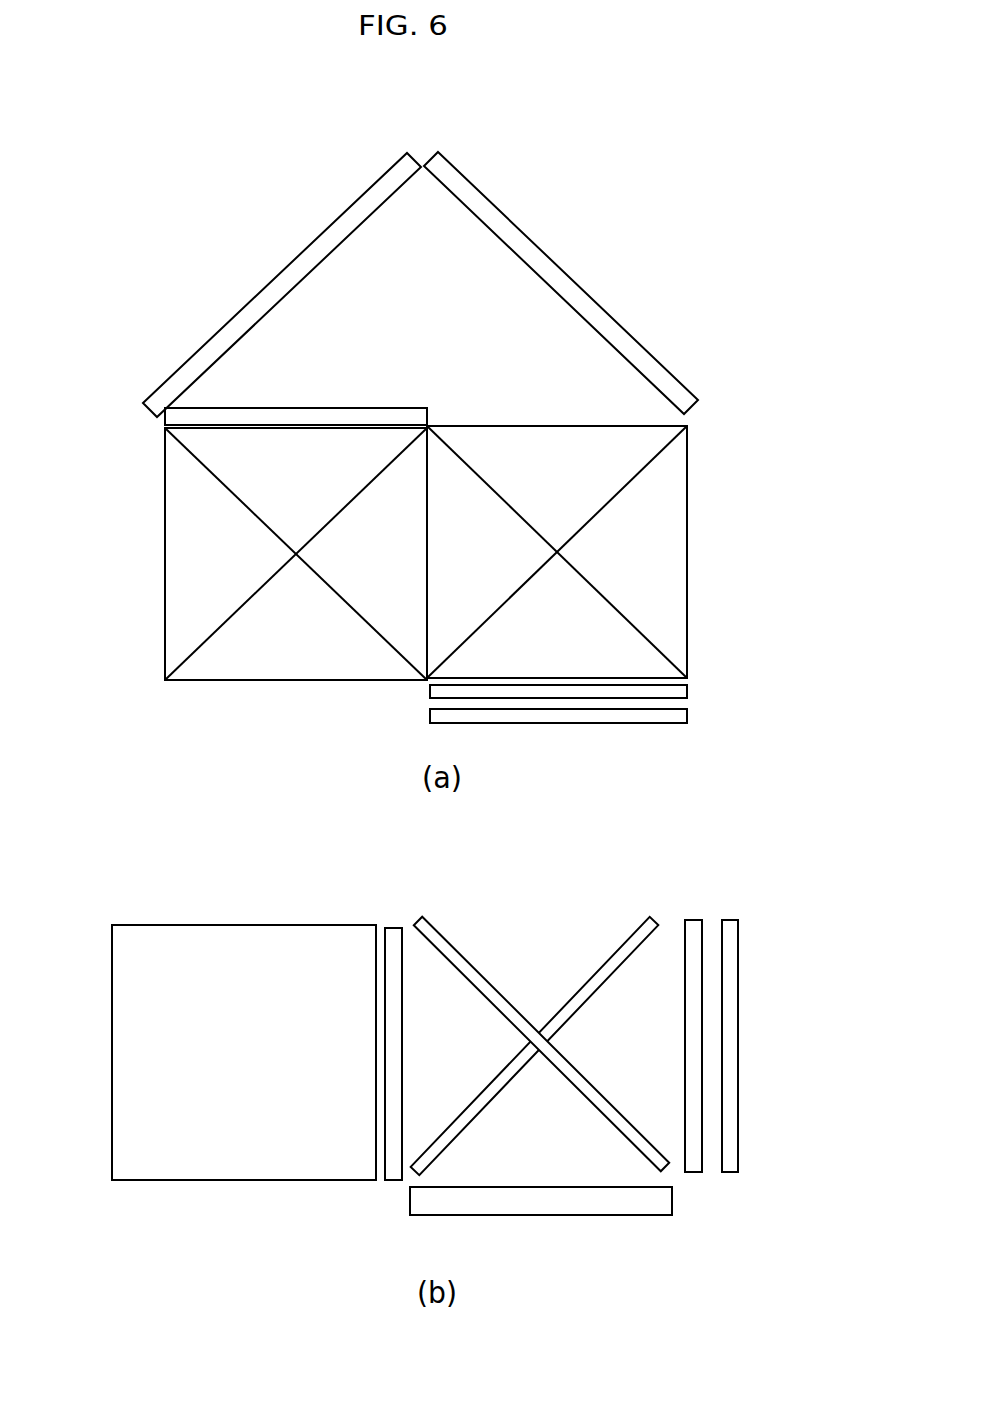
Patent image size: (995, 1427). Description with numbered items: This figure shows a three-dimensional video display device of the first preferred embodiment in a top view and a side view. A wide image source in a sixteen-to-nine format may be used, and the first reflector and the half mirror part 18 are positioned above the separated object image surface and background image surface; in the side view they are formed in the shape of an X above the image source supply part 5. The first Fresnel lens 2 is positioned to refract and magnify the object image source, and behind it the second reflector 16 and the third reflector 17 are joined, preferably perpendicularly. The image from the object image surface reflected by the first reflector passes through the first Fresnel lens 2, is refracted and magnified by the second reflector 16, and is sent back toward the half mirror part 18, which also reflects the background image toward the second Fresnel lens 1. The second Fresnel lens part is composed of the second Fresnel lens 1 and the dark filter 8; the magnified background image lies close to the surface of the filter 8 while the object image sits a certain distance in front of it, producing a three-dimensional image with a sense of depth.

The second Fresnel lens 1 is at (672, 693).
The first Fresnel lens 2 is at (347, 418).
The image source supply part 5 is at (622, 1202).
The dark filter 8 is at (680, 714).
The second reflector 16 is at (270, 280).
The third reflector 17 is at (568, 272).
The half mirror part 18 is at (653, 562).